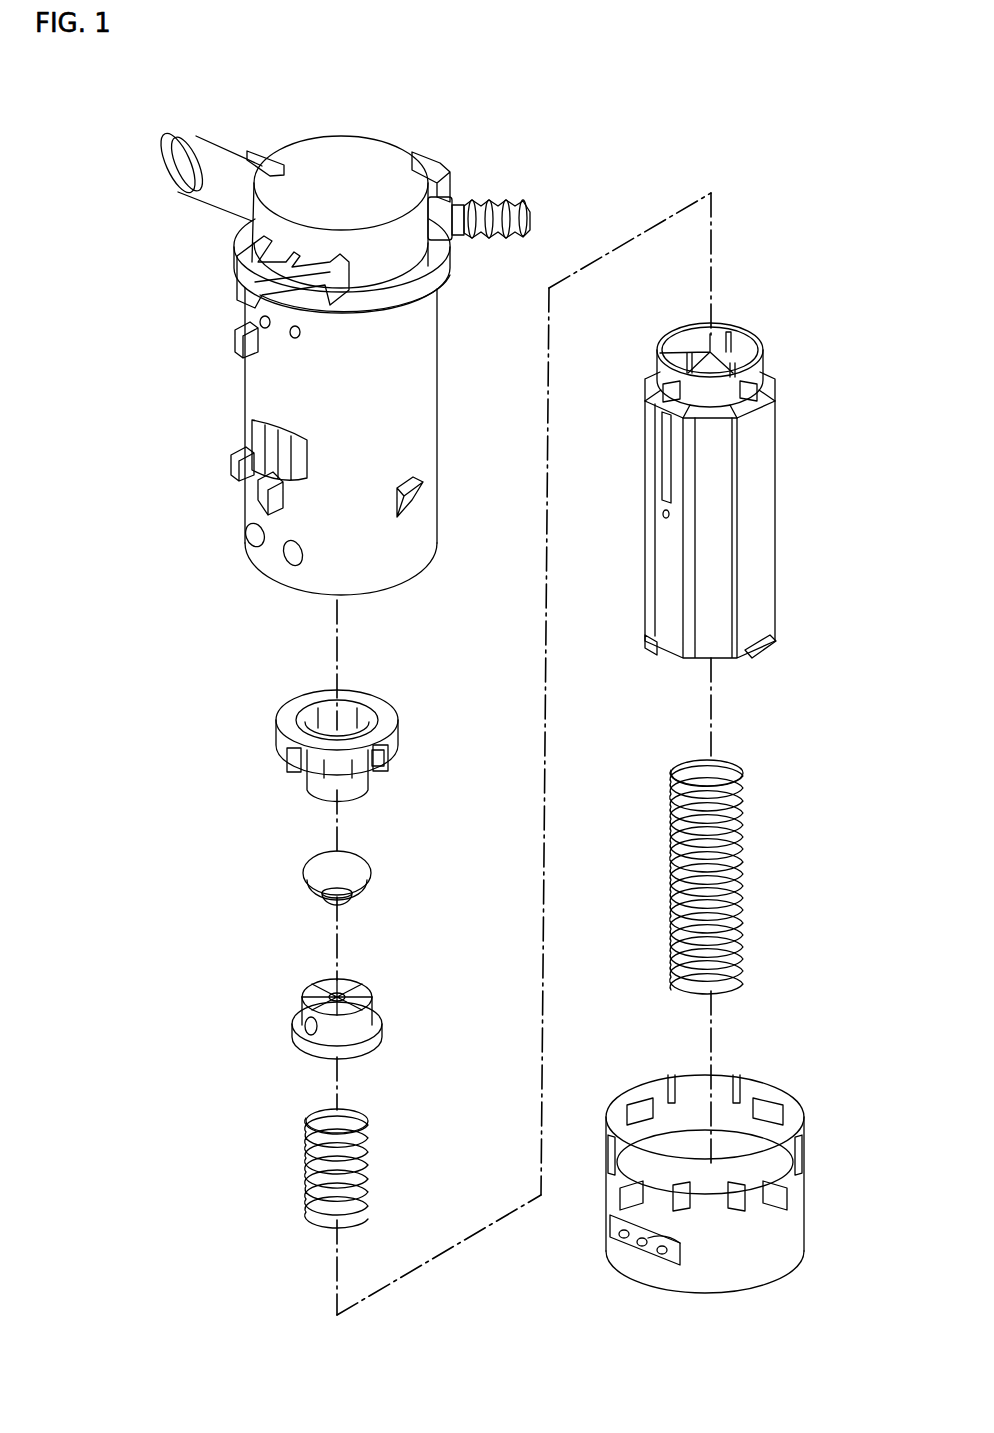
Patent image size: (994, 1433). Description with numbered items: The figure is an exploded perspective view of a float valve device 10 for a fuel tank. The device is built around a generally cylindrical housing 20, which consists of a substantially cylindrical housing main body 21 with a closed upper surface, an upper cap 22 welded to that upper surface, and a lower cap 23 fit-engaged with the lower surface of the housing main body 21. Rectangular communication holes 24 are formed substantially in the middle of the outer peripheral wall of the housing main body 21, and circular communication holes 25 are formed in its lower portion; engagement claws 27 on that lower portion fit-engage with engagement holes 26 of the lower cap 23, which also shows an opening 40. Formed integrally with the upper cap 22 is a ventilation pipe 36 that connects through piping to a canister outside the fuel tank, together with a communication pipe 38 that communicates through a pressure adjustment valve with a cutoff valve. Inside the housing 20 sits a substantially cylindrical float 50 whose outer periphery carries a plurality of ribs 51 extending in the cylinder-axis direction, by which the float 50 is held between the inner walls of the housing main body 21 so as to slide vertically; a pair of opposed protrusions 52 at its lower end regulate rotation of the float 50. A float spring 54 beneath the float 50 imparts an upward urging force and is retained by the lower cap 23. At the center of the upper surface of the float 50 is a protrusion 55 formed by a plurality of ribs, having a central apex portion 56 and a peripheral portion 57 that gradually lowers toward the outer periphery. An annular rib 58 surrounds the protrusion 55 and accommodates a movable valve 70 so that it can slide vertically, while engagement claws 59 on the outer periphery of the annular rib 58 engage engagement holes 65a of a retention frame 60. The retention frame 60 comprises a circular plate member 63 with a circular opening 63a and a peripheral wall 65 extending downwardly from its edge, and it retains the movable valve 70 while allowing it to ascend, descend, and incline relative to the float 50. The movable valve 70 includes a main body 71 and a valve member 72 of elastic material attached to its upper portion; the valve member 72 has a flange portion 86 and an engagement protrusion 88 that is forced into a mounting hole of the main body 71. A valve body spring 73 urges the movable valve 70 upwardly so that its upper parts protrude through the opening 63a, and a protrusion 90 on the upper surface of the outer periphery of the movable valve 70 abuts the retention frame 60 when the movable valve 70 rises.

The float valve device 10 is at (594, 182).
The housing 20 is at (218, 393).
The housing main body 21 is at (425, 360).
The upper cap 22 is at (370, 130).
The lower cap 23 is at (790, 1276).
The rectangular communication holes 24 is at (285, 460).
The circular communication holes 25 is at (300, 550).
The engagement holes 26 is at (787, 1196).
The engagement claws 27 is at (418, 490).
The ventilation pipe 36 is at (212, 150).
The communication pipe 38 is at (487, 197).
The curved opening 40 is at (665, 1252).
The float 50 is at (790, 500).
The ribs 51 is at (662, 600).
The protrusions 52 is at (765, 648).
The float spring 54 is at (745, 870).
The protrusion 55 is at (692, 328).
The apex portion 56 is at (718, 333).
The peripheral portion 57 is at (735, 348).
The annular rib 58 is at (757, 367).
The engagement claws 59 is at (656, 380).
The retention frame 60 is at (383, 685).
The plate member 63 is at (385, 714).
The opening 63a is at (347, 705).
The peripheral wall 65 is at (347, 787).
The engagement holes 65a is at (378, 762).
The movable valve 70 is at (217, 868).
The main body 71 is at (280, 1022).
The valve member 72 is at (290, 880).
The valve body spring 73 is at (370, 1165).
The flange portion 86 is at (360, 870).
The engagement protrusion 88 is at (345, 900).
The protrusion 90 is at (307, 1030).